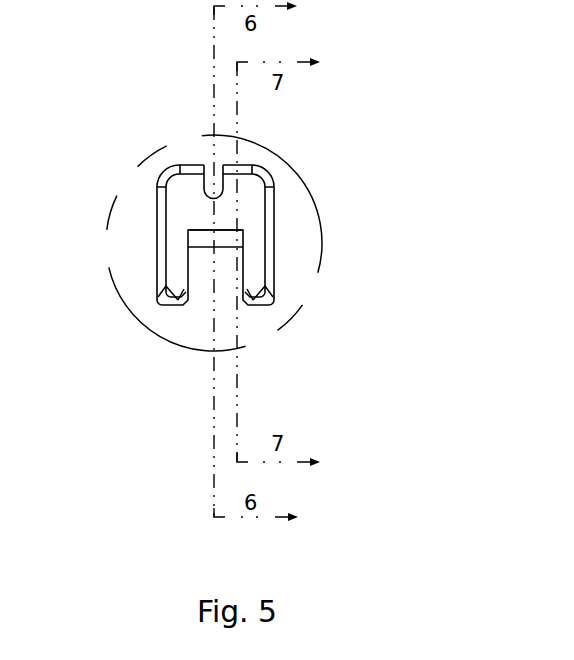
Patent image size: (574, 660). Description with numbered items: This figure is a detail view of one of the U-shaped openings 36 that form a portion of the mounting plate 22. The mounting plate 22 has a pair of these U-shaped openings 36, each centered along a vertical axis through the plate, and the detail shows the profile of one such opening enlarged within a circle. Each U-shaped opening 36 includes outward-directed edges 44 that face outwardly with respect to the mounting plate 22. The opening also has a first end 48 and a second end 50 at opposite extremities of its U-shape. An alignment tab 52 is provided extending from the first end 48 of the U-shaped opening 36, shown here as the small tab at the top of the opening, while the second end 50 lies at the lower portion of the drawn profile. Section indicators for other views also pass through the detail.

The rail 22 is at (307, 258).
The clip 36 is at (110, 174).
The base wall 44 is at (229, 225).
The top wall 48 is at (193, 175).
The foot 50 is at (163, 287).
The slot 52 is at (223, 191).